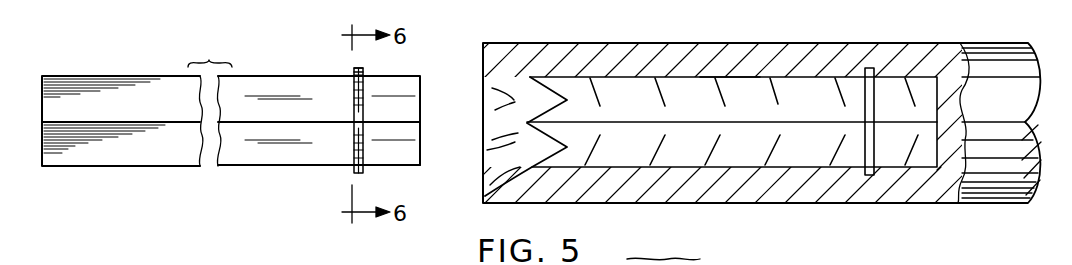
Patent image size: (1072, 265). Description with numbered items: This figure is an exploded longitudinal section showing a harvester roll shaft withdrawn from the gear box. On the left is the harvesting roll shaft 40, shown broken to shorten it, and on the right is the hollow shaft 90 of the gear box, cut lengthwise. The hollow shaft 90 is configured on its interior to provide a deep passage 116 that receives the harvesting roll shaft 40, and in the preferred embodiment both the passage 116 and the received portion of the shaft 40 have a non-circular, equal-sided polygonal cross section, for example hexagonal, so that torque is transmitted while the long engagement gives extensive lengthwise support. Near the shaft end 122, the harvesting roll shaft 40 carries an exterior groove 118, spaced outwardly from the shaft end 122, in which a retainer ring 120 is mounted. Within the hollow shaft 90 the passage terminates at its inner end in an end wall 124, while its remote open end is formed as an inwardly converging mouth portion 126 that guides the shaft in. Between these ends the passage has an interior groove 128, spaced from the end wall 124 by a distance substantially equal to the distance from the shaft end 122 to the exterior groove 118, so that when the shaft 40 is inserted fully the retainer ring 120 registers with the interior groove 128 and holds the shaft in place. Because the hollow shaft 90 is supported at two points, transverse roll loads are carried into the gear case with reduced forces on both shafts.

The harvesting roll shaft 40 is at (108, 76).
The exterior groove 118 is at (363, 86).
The retainer ring 120 is at (360, 72).
The shaft end 122 is at (470, 228).
The inwardly converging mouth portion 126 is at (530, 77).
The passage 116 is at (722, 77).
The interior groove 128 is at (872, 96).
The hollow shaft 90 is at (783, 203).
The end wall 124 is at (932, 165).